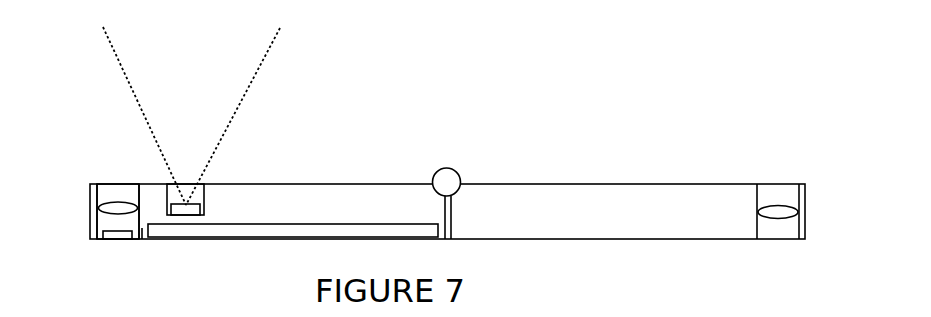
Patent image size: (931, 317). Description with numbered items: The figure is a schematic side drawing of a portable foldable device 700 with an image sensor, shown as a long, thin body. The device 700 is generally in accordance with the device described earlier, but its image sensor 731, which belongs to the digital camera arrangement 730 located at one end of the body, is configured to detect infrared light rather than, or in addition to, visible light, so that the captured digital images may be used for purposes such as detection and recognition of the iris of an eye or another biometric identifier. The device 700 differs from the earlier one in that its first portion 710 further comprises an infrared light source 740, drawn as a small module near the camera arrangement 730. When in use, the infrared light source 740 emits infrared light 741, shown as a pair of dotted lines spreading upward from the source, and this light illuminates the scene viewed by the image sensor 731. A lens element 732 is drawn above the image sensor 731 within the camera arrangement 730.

The device 700 is at (698, 117).
The first portion 710 is at (142, 233).
The digital camera arrangement 730 is at (92, 225).
The image sensor 731 is at (124, 235).
The lens 732 is at (107, 210).
The infrared light source 740 is at (187, 209).
The infrared light 741 is at (250, 87).